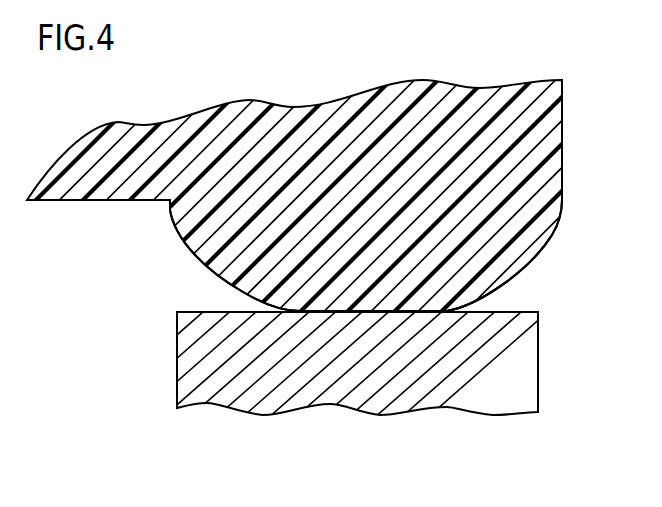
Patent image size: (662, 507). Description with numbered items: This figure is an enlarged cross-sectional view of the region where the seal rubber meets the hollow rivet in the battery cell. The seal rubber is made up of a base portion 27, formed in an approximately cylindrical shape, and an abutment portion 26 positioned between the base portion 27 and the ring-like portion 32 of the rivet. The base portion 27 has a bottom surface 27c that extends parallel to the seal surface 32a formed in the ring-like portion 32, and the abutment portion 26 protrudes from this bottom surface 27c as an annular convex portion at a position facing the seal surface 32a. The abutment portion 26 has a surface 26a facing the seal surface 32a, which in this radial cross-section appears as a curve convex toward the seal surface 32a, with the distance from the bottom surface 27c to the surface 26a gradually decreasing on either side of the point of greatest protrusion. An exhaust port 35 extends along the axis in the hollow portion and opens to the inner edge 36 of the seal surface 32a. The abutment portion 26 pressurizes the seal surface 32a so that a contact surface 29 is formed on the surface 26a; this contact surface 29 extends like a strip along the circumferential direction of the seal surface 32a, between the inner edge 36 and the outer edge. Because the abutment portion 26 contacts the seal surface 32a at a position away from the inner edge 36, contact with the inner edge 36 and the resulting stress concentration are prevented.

The base portion 27 is at (523, 127).
The bottom surface 27c is at (83, 200).
The abutment portion 26 is at (428, 245).
The surface 26a is at (530, 267).
The ring-like portion 32 is at (500, 362).
The seal surface 32a is at (517, 312).
The exhaust port 35 is at (177, 350).
The inner edge 36 is at (177, 312).
The contact surface 29 is at (360, 313).